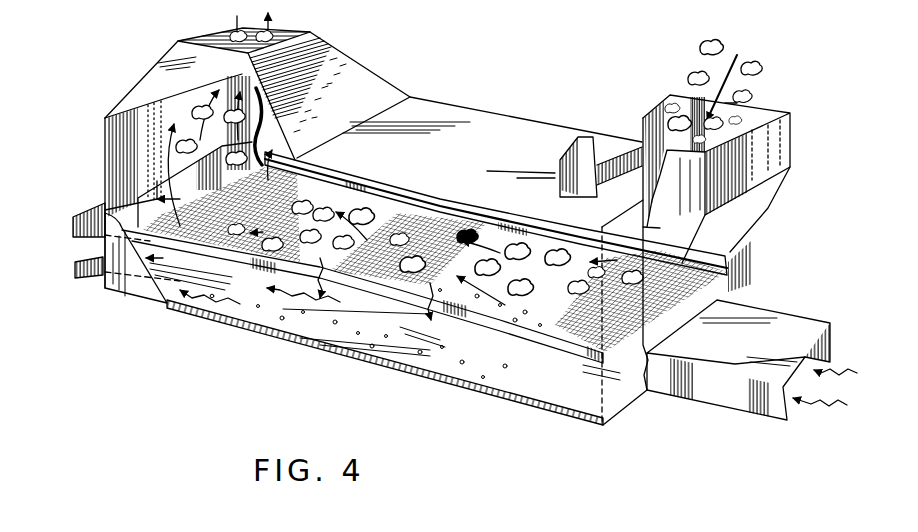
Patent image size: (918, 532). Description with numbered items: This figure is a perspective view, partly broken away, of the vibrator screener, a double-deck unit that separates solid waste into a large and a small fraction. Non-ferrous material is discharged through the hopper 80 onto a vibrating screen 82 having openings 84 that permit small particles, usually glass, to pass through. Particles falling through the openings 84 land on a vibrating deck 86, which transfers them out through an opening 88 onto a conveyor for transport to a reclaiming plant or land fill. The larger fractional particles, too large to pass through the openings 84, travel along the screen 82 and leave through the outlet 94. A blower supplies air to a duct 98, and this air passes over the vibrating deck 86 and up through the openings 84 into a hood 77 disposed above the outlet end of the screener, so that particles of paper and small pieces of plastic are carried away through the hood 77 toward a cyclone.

The hood 77 is at (363, 82).
The hopper 80 is at (783, 152).
The vibrating screen 82 is at (453, 220).
The openings 84 is at (576, 326).
The vibrating deck 86 is at (308, 332).
The opening 88 is at (75, 275).
The outlet 94 is at (82, 215).
The duct 98 is at (780, 326).